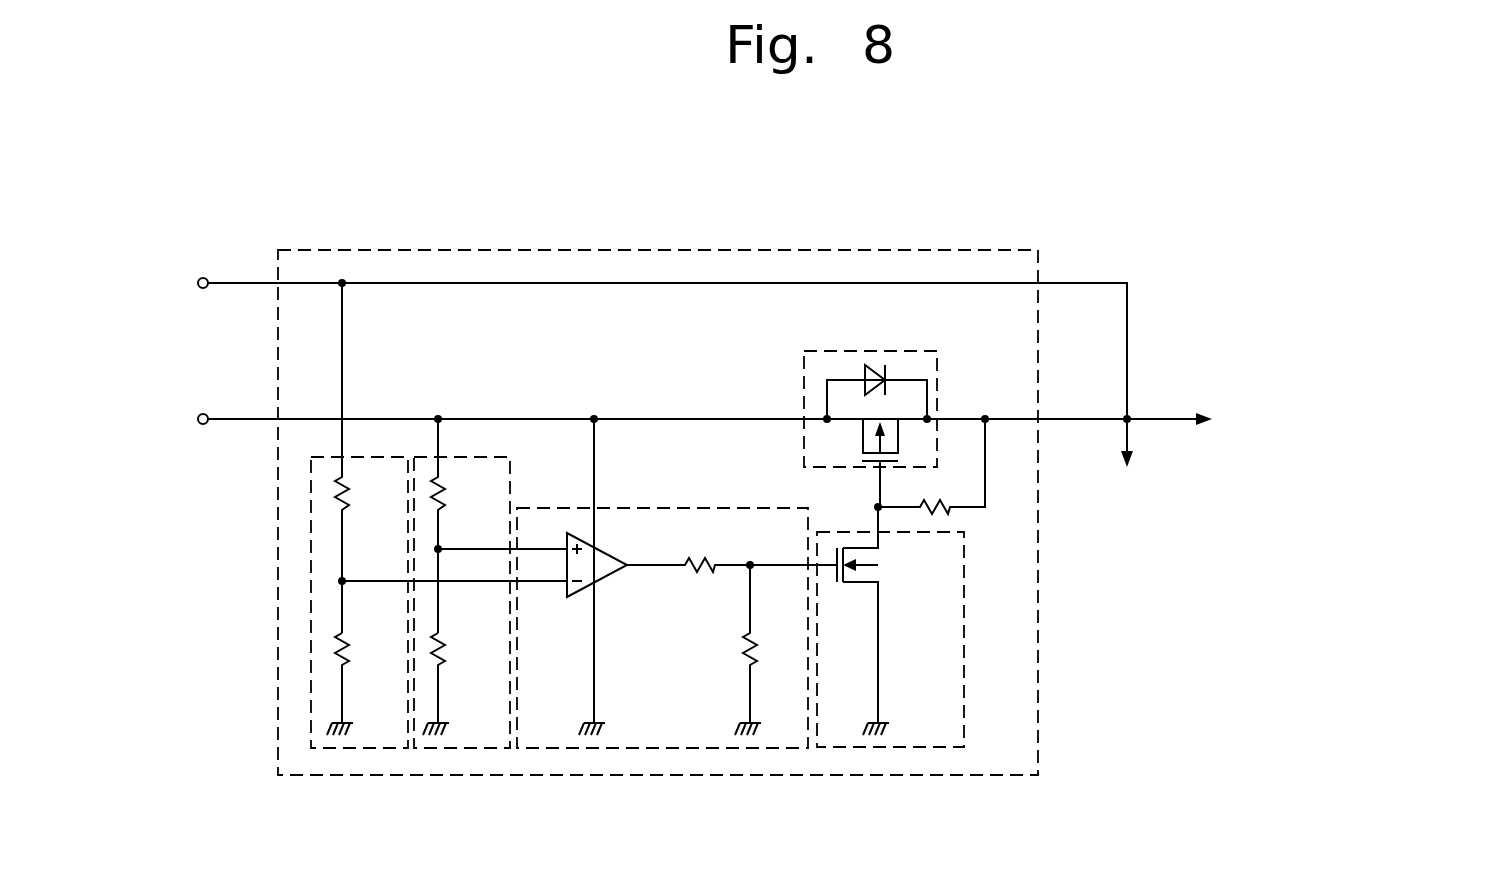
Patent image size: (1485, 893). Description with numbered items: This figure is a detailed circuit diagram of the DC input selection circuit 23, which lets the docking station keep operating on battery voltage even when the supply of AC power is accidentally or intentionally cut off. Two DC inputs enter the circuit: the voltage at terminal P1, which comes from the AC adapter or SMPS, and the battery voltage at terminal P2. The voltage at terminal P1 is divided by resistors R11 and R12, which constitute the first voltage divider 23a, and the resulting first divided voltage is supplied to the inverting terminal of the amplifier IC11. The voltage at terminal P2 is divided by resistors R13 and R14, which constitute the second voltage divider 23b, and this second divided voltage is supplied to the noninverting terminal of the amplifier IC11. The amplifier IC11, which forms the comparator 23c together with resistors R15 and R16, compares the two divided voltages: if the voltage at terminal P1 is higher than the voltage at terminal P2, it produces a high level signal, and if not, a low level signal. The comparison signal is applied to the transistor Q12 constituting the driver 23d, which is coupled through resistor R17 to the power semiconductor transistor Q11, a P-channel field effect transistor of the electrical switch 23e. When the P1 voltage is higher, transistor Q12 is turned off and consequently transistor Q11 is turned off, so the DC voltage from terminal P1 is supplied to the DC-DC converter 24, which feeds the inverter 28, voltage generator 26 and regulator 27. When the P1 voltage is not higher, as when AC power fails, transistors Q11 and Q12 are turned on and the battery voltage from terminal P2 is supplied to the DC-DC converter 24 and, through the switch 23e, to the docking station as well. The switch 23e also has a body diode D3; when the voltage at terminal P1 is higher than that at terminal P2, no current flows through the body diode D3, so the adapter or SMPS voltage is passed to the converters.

The DC input selection circuit 23 is at (915, 250).
The first voltage divider 23a is at (377, 456).
The second voltage divider 23b is at (477, 456).
The comparator 23c is at (630, 508).
The driver 23d is at (965, 575).
The electrical switch 23e is at (880, 351).
The resistor R11 is at (365, 458).
The resistor R12 is at (361, 684).
The resistor R13 is at (461, 526).
The resistor R14 is at (457, 684).
The resistor R15 is at (732, 548).
The resistor R16 is at (728, 650).
The resistor R17 is at (931, 466).
The amplifier IC11 is at (498, 577).
The power semiconductor transistor Q11 is at (854, 463).
The transistor Q12 is at (882, 619).
The body diode D3 is at (864, 373).
The terminal P1 is at (647, 345).
The terminal P2 is at (681, 419).
The DC-DC converter 24 is at (1339, 418).
The voltage generator 26 is at (1213, 513).
The regulator 27 is at (1155, 546).
The inverter 28 is at (1148, 456).